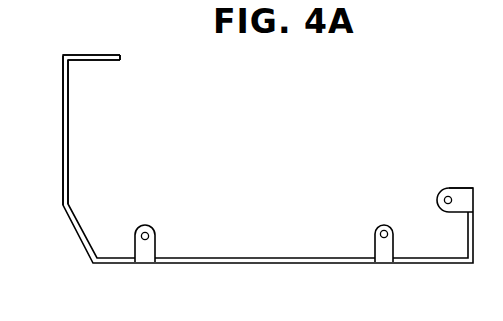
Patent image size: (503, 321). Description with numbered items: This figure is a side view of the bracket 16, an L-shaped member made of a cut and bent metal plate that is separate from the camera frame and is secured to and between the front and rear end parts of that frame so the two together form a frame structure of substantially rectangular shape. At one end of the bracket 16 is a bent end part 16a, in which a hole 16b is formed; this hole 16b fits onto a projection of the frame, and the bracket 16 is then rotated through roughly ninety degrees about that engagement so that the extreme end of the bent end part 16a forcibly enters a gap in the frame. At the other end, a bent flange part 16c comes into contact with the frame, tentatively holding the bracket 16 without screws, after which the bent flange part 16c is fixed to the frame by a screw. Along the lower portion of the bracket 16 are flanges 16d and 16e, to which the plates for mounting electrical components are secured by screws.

The bracket 16 is at (317, 92).
The bent end part 16a is at (108, 53).
The hole 16b is at (79, 53).
The bent flange part 16c is at (460, 189).
The flange 16d is at (151, 246).
The flange 16e is at (375, 242).